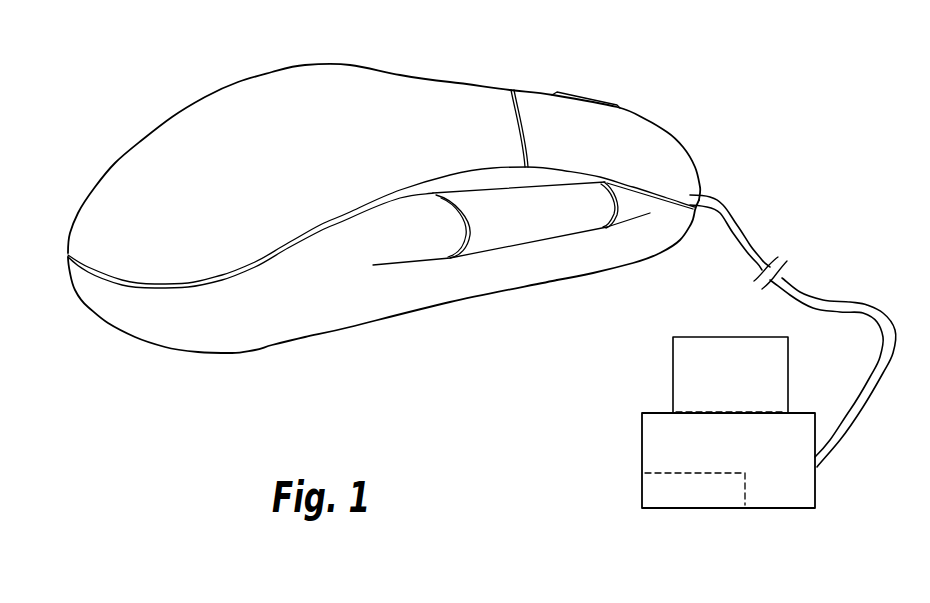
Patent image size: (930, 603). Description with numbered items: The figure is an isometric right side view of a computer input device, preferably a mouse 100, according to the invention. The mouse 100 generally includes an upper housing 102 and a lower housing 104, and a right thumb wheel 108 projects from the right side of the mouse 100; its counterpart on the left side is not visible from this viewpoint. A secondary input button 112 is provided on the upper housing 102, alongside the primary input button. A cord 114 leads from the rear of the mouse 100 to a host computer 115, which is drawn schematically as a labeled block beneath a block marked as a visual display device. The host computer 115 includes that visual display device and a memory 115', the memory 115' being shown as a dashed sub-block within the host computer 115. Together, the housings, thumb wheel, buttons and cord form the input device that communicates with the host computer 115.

The mouse 100 is at (652, 86).
The upper housing 102 is at (400, 82).
The lower housing 104 is at (276, 316).
The right thumb wheel 108 is at (506, 237).
The secondary input button 112 is at (658, 148).
The cord 114 is at (752, 240).
The host computer 115 is at (736, 442).
The memory 115' is at (695, 518).